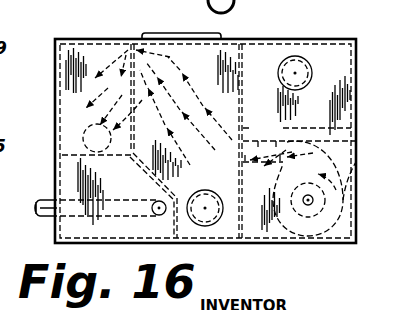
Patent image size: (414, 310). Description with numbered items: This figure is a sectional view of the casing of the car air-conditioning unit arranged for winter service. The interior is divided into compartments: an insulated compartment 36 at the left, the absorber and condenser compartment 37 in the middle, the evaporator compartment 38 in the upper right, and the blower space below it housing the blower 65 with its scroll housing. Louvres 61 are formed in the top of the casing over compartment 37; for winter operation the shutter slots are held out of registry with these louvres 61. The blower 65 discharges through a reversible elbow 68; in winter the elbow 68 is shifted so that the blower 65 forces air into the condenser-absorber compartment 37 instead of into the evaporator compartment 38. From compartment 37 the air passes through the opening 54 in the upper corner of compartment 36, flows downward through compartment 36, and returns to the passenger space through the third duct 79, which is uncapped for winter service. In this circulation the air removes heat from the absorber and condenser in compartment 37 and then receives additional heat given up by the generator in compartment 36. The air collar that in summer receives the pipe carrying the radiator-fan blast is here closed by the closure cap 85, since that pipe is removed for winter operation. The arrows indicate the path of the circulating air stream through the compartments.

The compartment 36 is at (83, 42).
The opening 54 is at (131, 44).
The louvres 61 is at (150, 36).
The absorber and condenser compartment 37 is at (235, 42).
The evaporator compartment 38 is at (322, 55).
The elbow 68 is at (356, 141).
The blower 65 is at (356, 162).
The third duct 79 is at (84, 135).
The closure cap 85 is at (217, 222).